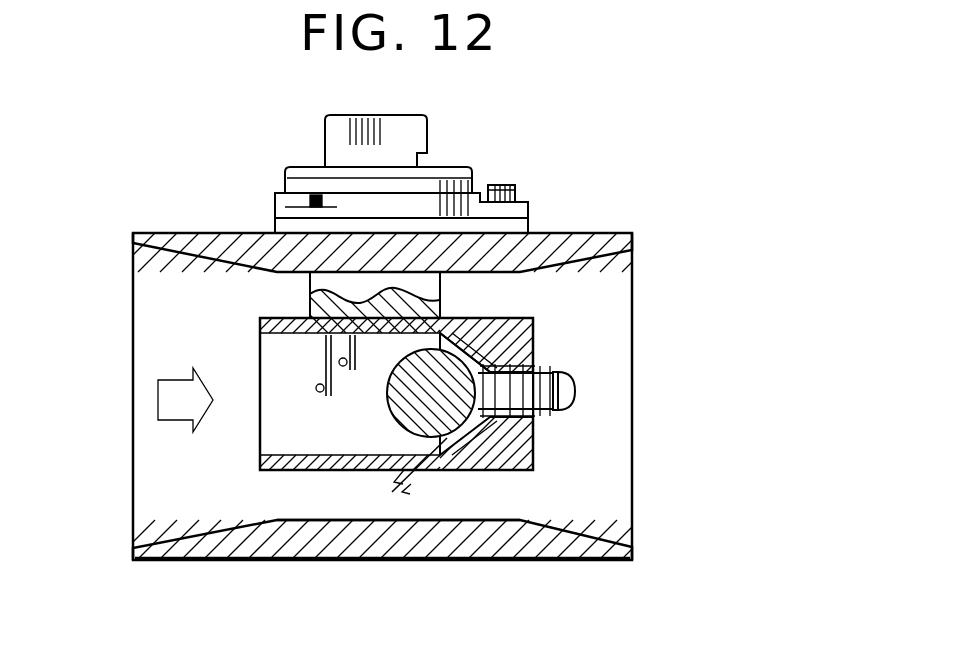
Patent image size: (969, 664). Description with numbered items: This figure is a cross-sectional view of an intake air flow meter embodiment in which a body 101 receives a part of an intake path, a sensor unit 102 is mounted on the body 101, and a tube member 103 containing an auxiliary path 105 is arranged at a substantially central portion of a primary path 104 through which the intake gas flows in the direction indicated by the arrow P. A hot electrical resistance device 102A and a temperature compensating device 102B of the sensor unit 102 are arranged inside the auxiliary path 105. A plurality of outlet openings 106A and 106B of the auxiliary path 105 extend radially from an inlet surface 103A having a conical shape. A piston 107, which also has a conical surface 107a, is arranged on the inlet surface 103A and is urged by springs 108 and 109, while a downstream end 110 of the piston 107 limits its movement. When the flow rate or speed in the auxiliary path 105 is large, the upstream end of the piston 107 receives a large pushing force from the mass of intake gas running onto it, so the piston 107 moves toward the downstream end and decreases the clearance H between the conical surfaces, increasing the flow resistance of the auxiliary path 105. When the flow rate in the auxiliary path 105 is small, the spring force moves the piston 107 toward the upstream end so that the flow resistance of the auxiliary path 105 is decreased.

The body 101 is at (272, 548).
The sensor unit 102 is at (372, 198).
The hot electrical resistance device 102A is at (318, 390).
The temperature compensating device 102B is at (344, 368).
The tube member 103 is at (329, 470).
The inlet surface 103A is at (513, 460).
The primary path 104 is at (158, 288).
The auxiliary path 105 is at (272, 355).
The outlet opening 106A is at (503, 470).
The outlet opening 106B is at (500, 318).
The piston 107 is at (515, 345).
The conical surface 107a is at (490, 318).
The spring 108 is at (528, 420).
The spring 109 is at (543, 402).
The downstream end 110 is at (577, 390).
The flow direction P is at (159, 400).
The clearance H is at (398, 497).